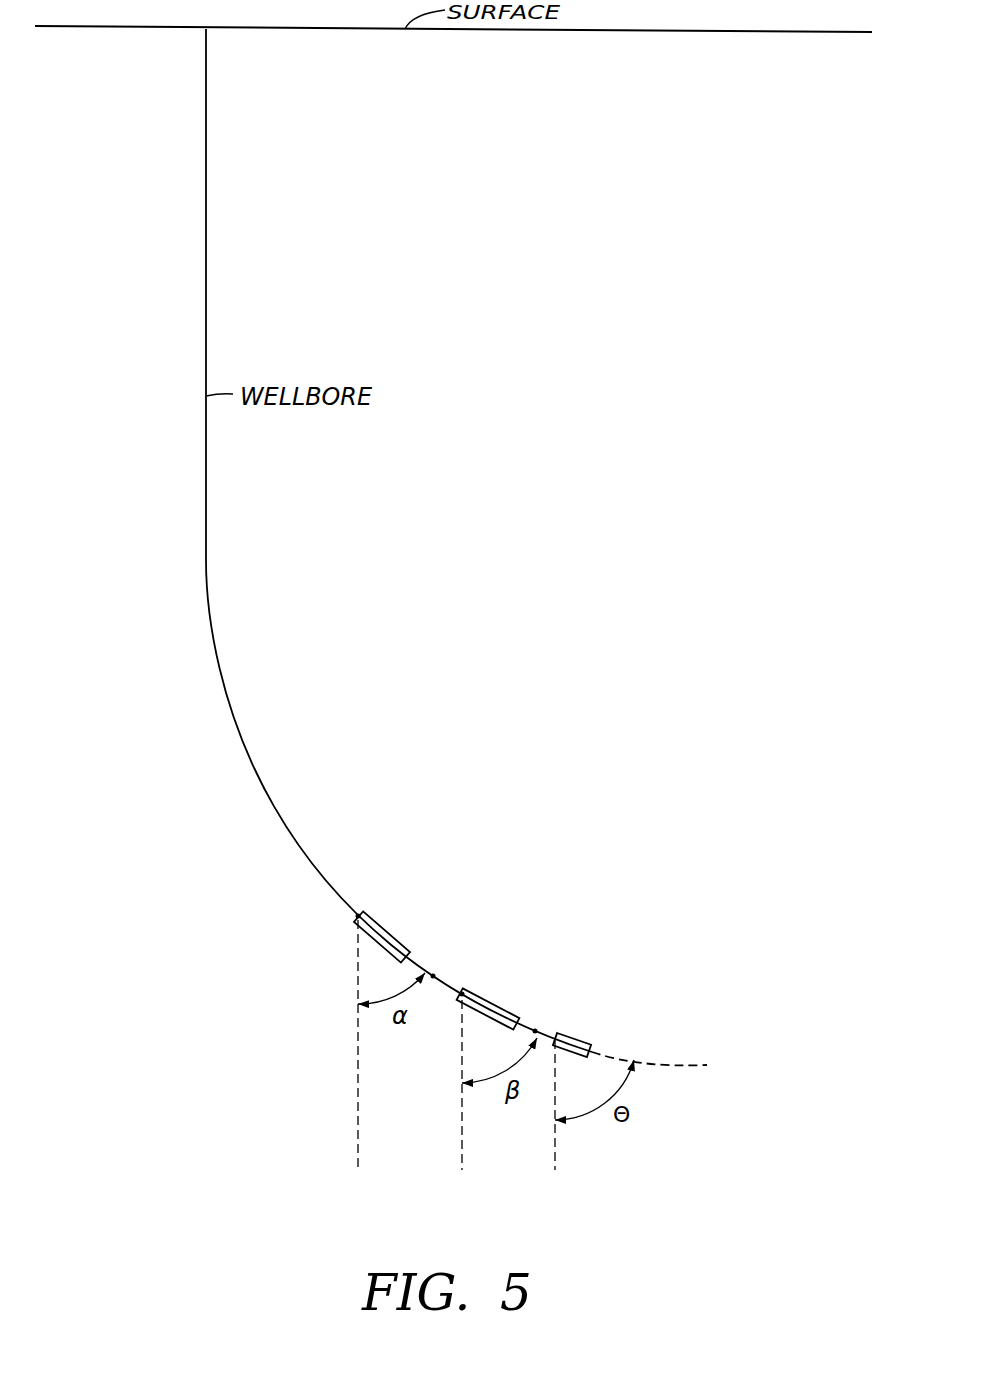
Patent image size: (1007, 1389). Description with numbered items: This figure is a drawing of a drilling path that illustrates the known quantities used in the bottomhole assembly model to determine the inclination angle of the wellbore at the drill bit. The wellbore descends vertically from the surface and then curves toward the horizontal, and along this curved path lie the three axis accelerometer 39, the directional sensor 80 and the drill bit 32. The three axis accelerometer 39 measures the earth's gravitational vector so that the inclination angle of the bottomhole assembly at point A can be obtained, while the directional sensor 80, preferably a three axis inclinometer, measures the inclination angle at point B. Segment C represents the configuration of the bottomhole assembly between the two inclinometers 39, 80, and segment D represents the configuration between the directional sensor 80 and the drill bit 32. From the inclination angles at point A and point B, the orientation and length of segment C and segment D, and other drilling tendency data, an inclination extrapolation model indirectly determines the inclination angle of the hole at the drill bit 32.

The three axis accelerometer 39 is at (378, 910).
The directional sensor 80 is at (493, 998).
The drill bit 32 is at (578, 1033).
The point A is at (402, 942).
The point B is at (471, 990).
The segment C is at (433, 977).
The segment D is at (536, 1032).